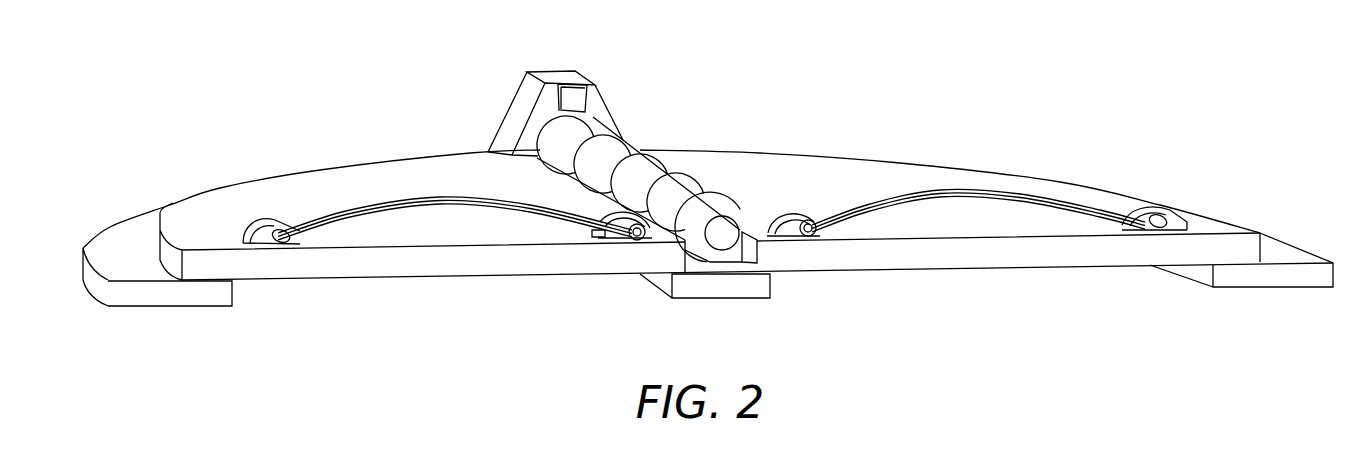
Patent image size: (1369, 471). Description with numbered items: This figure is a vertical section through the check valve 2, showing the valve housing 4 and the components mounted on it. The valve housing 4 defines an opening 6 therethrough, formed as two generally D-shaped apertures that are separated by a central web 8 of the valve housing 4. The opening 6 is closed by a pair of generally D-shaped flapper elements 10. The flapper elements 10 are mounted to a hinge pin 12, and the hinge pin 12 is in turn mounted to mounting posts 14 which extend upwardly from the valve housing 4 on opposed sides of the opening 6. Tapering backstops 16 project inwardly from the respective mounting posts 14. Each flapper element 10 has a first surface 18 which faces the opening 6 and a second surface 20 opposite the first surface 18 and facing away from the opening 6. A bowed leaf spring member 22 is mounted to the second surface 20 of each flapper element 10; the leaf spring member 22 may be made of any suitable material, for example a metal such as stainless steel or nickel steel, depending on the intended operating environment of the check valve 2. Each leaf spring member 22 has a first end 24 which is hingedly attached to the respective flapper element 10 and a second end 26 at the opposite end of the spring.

The check valve 2 is at (99, 219).
The valve housing 4 is at (151, 304).
The opening 6 is at (530, 290).
The central web 8 is at (718, 289).
The flapper element 10 is at (211, 200).
The hinge pin 12 is at (722, 226).
The mounting post 14 is at (517, 98).
The backstop 16 is at (586, 88).
The first surface 18 is at (415, 283).
The second surface 20 is at (316, 178).
The leaf spring member 22 is at (434, 196).
The first end 24 is at (640, 244).
The second end 26 is at (275, 250).